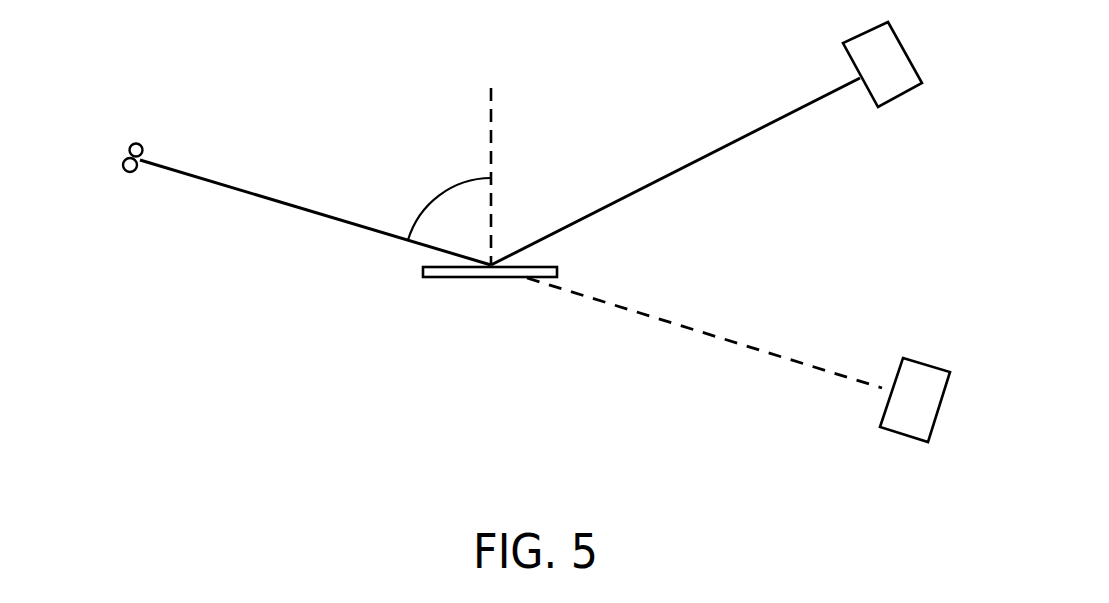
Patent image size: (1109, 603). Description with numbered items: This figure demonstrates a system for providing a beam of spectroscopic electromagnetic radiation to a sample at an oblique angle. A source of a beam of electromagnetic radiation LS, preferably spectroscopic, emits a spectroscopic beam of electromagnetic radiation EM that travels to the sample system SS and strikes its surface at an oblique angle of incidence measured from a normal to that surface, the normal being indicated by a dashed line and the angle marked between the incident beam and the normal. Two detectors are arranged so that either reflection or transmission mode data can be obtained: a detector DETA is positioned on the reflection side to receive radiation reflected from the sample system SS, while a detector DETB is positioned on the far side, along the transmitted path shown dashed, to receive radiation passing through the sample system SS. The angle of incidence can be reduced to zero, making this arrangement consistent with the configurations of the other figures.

The source of a beam of electromagnetic radiation LS is at (110, 153).
The spectroscopic beam of electromagnetic radiation EM is at (244, 174).
The sample system SS is at (490, 200).
The detector for reflection mode data DETA is at (706, 143).
The detector for transmission mode data DETB is at (740, 384).